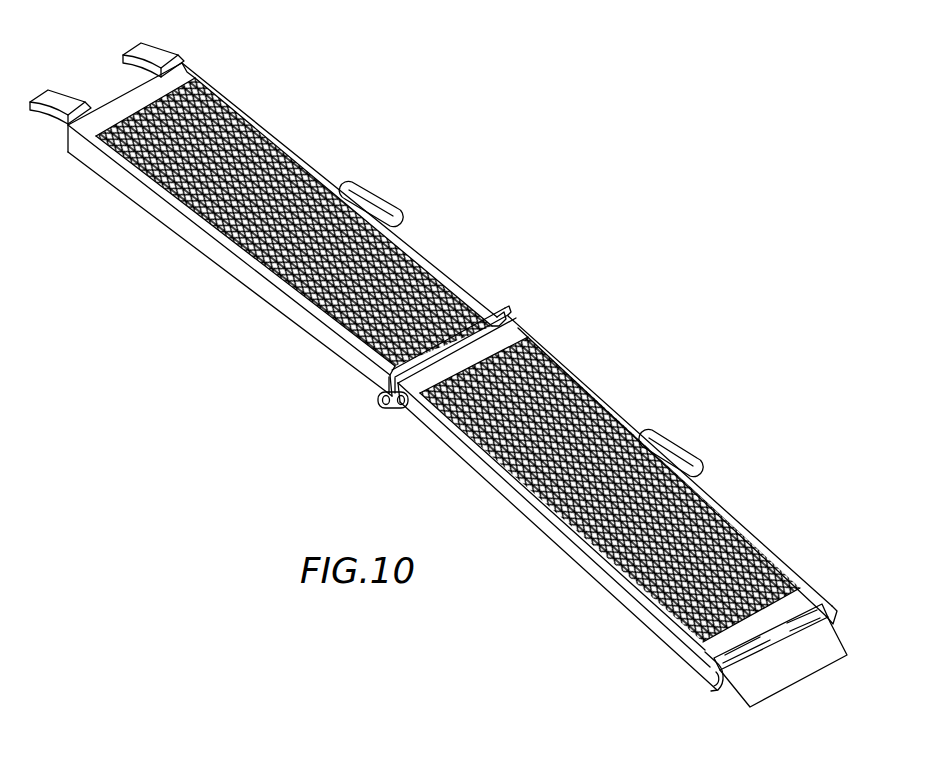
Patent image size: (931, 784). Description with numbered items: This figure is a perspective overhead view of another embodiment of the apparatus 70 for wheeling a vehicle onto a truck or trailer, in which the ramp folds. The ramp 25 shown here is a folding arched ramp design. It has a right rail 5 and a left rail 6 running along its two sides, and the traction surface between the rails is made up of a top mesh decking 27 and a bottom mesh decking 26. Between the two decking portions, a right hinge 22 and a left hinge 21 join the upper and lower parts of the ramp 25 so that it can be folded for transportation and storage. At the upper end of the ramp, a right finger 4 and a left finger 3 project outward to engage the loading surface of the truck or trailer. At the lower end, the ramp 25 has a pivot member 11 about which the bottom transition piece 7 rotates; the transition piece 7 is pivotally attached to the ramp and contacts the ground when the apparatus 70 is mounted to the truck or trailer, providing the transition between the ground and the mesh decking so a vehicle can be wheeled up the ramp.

The apparatus 70 is at (438, 362).
The left finger 3 is at (58, 98).
The right finger 4 is at (158, 52).
The right rail 5 is at (325, 176).
The left rail 6 is at (272, 298).
The top mesh decking 27 is at (188, 220).
The right hinge 22 is at (509, 312).
The left hinge 21 is at (390, 406).
The ramp 25 is at (492, 462).
The bottom mesh decking 26 is at (580, 379).
The pivot member 11 is at (706, 668).
The transition piece 7 is at (774, 678).